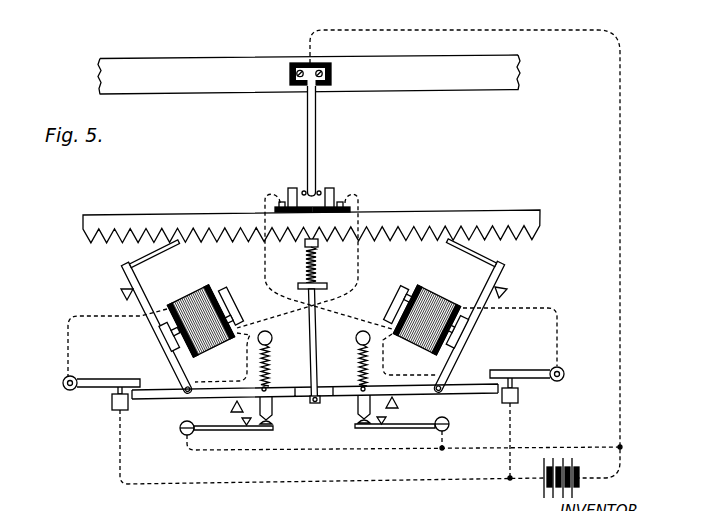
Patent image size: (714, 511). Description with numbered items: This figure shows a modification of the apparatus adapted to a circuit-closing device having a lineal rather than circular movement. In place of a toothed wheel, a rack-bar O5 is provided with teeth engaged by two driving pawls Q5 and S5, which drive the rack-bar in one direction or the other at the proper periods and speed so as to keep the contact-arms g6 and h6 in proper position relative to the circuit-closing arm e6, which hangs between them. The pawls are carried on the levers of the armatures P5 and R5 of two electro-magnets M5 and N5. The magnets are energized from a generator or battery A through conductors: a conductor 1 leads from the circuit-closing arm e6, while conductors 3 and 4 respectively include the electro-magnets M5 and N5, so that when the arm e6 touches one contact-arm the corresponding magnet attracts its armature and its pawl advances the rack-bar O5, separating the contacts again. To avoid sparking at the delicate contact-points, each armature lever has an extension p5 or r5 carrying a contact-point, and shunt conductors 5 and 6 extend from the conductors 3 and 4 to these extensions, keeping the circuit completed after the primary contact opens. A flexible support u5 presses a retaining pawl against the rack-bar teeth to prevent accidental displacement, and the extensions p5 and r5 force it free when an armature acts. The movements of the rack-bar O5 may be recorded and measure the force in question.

The conductor 1 is at (470, 247).
The conductor 3 is at (411, 337).
The conductor 4 is at (306, 339).
The conductor 5 is at (419, 392).
The conductor 6 is at (403, 392).
The circuit-closing arm e6 is at (312, 133).
The contact-arm g6 is at (291, 188).
The contact-arm h6 is at (332, 188).
The rack-bar O5 is at (400, 221).
The pawl Q5 is at (455, 315).
The pawl S5 is at (143, 251).
The electro-magnet N5 is at (191, 294).
The electro-magnet M5 is at (434, 293).
The armature R5 is at (163, 338).
The armature P5 is at (462, 336).
The flexible support u5 is at (319, 321).
The extension r5 is at (286, 390).
The extension p5 is at (348, 387).
The electric generator or battery A is at (566, 476).